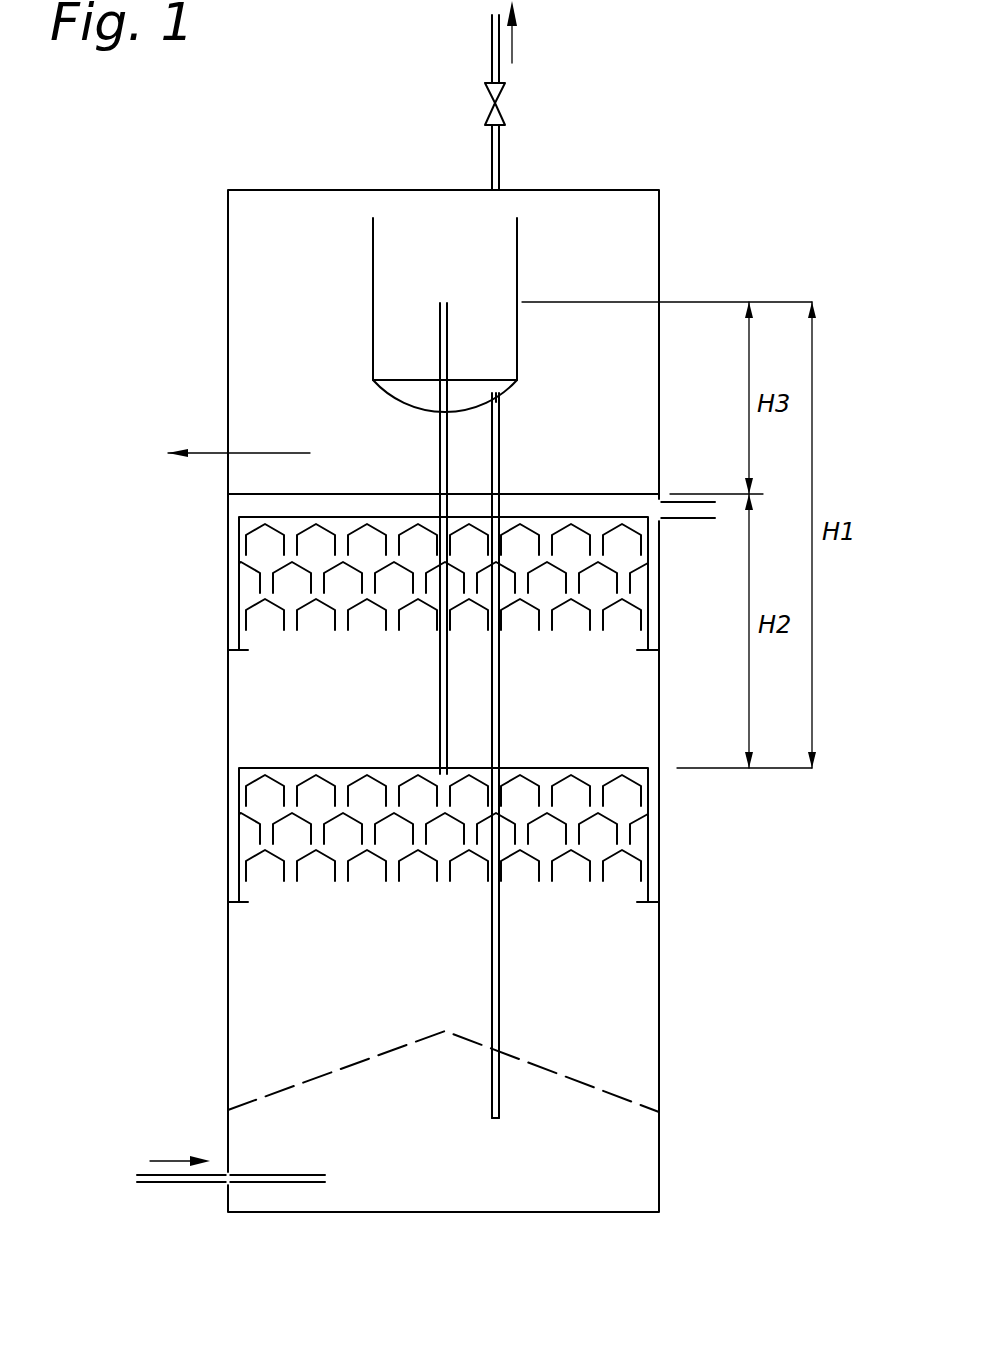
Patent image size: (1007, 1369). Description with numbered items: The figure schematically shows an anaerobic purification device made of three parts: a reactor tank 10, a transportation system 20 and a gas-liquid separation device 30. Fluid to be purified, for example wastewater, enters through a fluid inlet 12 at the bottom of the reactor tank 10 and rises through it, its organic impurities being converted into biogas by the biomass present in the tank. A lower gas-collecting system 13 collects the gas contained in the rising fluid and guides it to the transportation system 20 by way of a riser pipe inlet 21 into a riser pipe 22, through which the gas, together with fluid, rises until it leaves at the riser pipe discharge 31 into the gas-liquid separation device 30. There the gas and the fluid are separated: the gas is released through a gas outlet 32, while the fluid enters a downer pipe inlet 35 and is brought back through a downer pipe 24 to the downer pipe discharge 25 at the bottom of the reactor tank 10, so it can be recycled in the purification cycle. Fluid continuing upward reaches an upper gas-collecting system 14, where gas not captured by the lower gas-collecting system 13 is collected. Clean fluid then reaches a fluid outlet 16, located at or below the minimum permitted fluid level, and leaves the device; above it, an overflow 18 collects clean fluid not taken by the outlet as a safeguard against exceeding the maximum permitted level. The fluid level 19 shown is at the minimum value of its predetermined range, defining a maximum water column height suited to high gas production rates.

The reactor tank 10 is at (228, 1012).
The fluid inlet 12 is at (188, 1180).
The lower gas-collecting system 13 is at (293, 826).
The upper gas-collecting system 14 is at (291, 580).
The fluid outlet 16 is at (682, 508).
The overflow 18 is at (217, 453).
The fluid level 19 is at (587, 494).
The transportation system 20 is at (405, 652).
The riser pipe inlet 21 is at (440, 768).
The riser pipe 22 is at (447, 700).
The downer pipe 24 is at (495, 973).
The downer pipe discharge 25 is at (495, 1118).
The gas-liquid separation device 30 is at (473, 252).
The riser pipe discharge 31 is at (432, 412).
The gas outlet 32 is at (500, 191).
The downer pipe inlet 35 is at (500, 397).